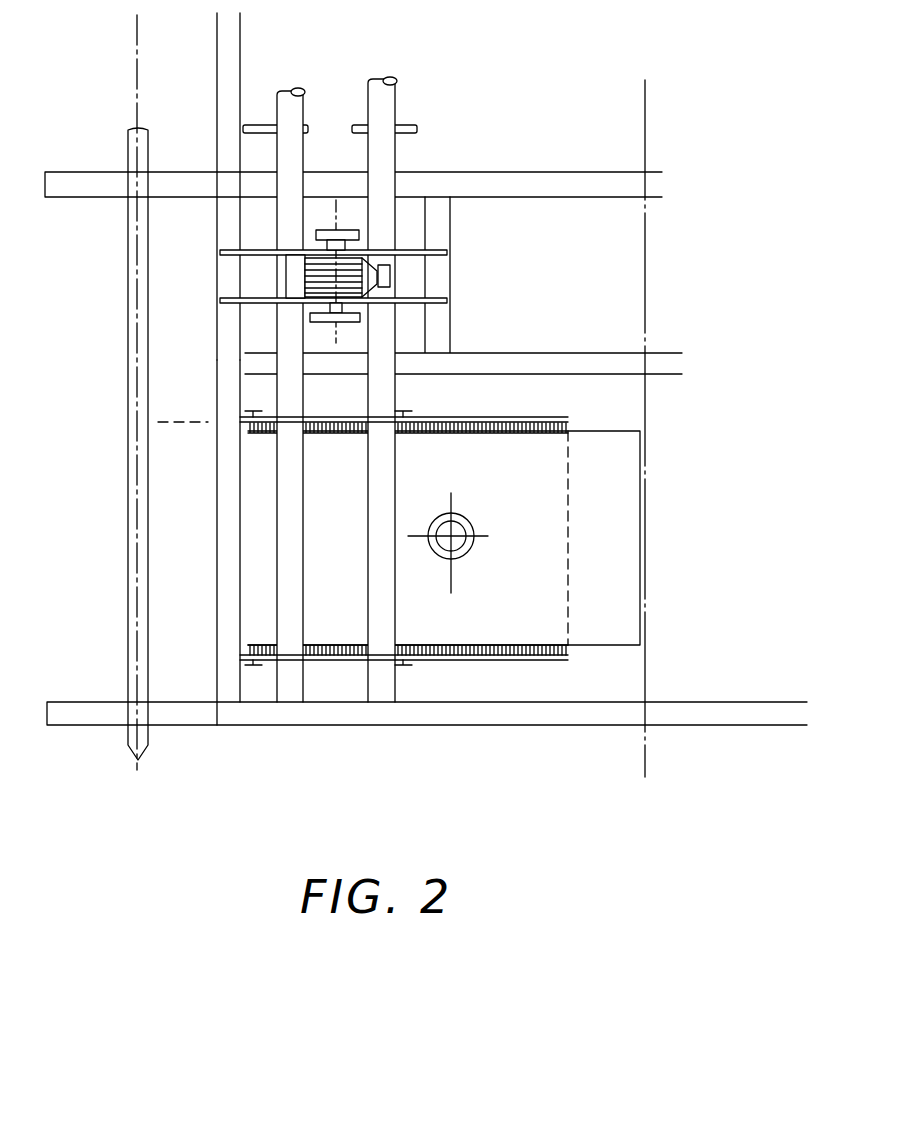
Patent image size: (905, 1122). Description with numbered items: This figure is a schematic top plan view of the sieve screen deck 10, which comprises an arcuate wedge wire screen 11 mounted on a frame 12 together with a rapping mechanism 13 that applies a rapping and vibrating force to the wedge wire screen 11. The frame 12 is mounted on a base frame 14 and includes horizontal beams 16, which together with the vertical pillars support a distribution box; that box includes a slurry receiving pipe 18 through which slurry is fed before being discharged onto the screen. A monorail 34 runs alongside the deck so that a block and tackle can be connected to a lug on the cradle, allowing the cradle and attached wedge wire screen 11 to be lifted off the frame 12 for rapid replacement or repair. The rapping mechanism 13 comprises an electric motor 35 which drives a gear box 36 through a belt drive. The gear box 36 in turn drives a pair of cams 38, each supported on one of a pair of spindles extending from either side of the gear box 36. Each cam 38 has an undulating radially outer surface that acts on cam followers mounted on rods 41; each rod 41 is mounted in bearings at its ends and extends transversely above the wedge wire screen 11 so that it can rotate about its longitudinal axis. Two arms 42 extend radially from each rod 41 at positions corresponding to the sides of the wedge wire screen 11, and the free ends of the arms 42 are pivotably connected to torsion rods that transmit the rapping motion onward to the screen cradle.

The sieve screen deck 10 is at (662, 527).
The wedge wire screen 11 is at (567, 420).
The frame 12 is at (228, 547).
The rapping mechanism 13 is at (397, 276).
The base frame 14 is at (475, 715).
The horizontal beams 16 is at (233, 52).
The slurry receiving pipe 18 is at (465, 557).
The monorail 34 is at (130, 377).
The electric motor 35 is at (320, 278).
The gear box 36 is at (292, 262).
The cams 38 is at (357, 232).
The rods 41 is at (380, 535).
The arms 42 is at (258, 435).